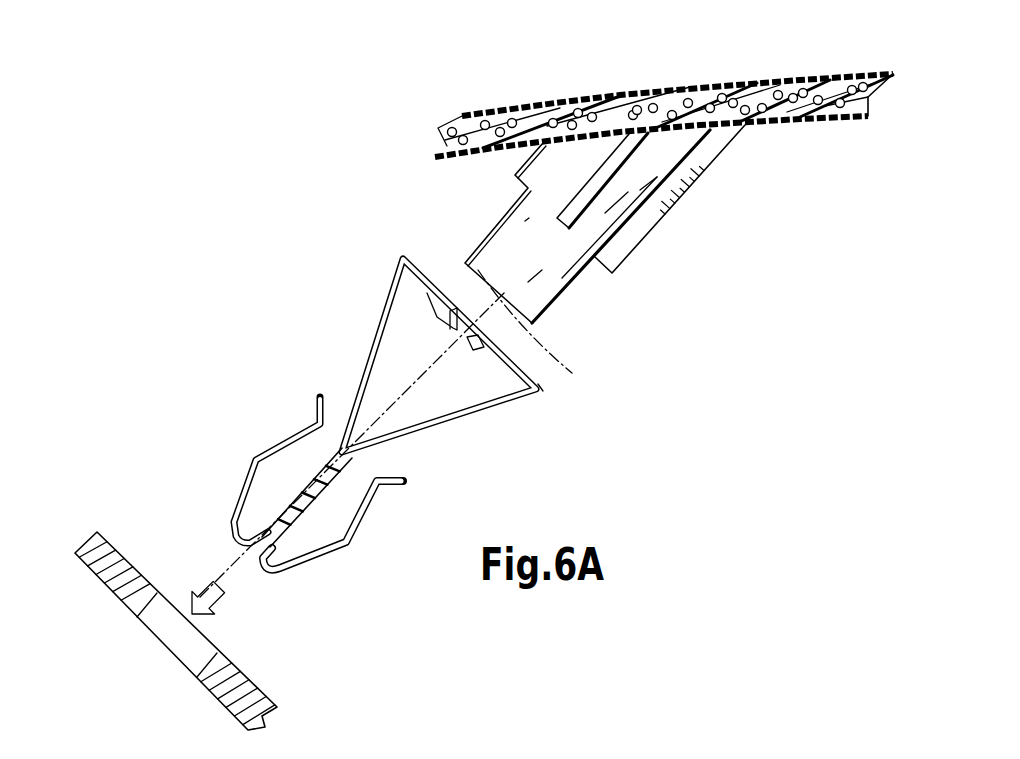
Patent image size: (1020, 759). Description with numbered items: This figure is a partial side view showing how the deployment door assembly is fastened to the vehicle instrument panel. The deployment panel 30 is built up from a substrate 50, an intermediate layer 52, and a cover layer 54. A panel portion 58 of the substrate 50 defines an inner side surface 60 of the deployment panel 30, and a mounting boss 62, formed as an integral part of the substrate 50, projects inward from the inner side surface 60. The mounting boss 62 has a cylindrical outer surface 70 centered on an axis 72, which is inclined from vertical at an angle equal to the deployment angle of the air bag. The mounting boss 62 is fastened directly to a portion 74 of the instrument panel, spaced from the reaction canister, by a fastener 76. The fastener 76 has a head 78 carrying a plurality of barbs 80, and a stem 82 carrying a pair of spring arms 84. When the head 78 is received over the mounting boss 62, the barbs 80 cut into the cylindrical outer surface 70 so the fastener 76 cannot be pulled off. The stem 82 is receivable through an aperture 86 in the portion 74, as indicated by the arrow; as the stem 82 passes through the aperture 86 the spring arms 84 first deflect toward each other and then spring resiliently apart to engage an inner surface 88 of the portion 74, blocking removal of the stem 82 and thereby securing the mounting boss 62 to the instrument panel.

The deployment panel 30 is at (496, 91).
The substrate 50 is at (815, 138).
The intermediate layer 52 is at (775, 80).
The cover layer 54 is at (850, 70).
The panel portion 58 is at (843, 119).
The inner side surface 60 is at (438, 158).
The mounting boss 62 is at (657, 254).
The cylindrical outer surface 70 is at (552, 278).
The axis 72 is at (572, 373).
The portion of the instrument panel 74 is at (122, 552).
The fastener 76 is at (362, 313).
The head 78 is at (543, 390).
The barbs 80 is at (442, 330).
The stem 82 is at (312, 500).
The spring arms 84 is at (262, 450).
The aperture 86 is at (140, 644).
The inner surface 88 is at (83, 578).